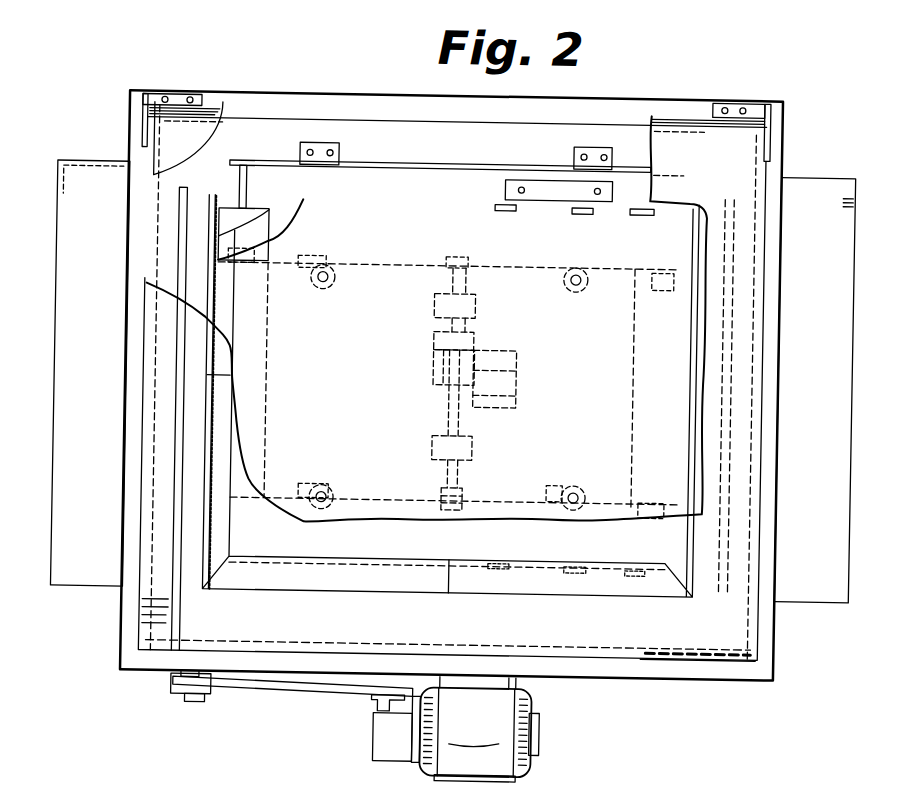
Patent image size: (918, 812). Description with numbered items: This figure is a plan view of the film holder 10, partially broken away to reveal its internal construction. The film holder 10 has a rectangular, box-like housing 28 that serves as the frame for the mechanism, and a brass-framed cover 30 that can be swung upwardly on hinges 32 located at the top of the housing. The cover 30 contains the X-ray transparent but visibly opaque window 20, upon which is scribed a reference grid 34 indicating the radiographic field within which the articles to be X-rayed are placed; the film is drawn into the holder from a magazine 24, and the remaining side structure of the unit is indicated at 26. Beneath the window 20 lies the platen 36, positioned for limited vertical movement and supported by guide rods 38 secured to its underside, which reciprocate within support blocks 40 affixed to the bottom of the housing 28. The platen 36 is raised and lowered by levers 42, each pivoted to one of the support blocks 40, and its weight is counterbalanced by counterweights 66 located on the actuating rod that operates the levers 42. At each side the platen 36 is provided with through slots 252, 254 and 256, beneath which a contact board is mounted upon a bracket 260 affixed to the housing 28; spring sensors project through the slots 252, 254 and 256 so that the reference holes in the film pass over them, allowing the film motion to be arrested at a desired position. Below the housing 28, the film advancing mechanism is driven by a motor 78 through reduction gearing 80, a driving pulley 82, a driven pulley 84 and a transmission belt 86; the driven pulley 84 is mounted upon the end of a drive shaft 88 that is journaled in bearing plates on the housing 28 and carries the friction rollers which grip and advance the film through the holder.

The film holder 10 is at (631, 87).
The window 20 is at (366, 596).
The magazine 24 is at (80, 603).
The right side panel 26 is at (812, 598).
The housing 28 is at (673, 661).
The cover 30 is at (126, 137).
The hinges 32 is at (147, 97).
The reference grid 34 is at (452, 582).
The platen 36 is at (667, 199).
The guide rods 38 is at (335, 270).
The support blocks 40 is at (331, 290).
The levers 42 is at (280, 265).
The counterweights 66 is at (432, 304).
The motor 78 is at (484, 733).
The reduction gearing 80 is at (382, 740).
The driving pulley 82 is at (381, 697).
The driven pulley 84 is at (181, 689).
The transmission belt 86 is at (298, 690).
The drive shaft 88 is at (199, 697).
The through slot 252 is at (497, 211).
The through slot 254 is at (577, 210).
The through slot 256 is at (655, 211).
The bracket 260 is at (502, 188).